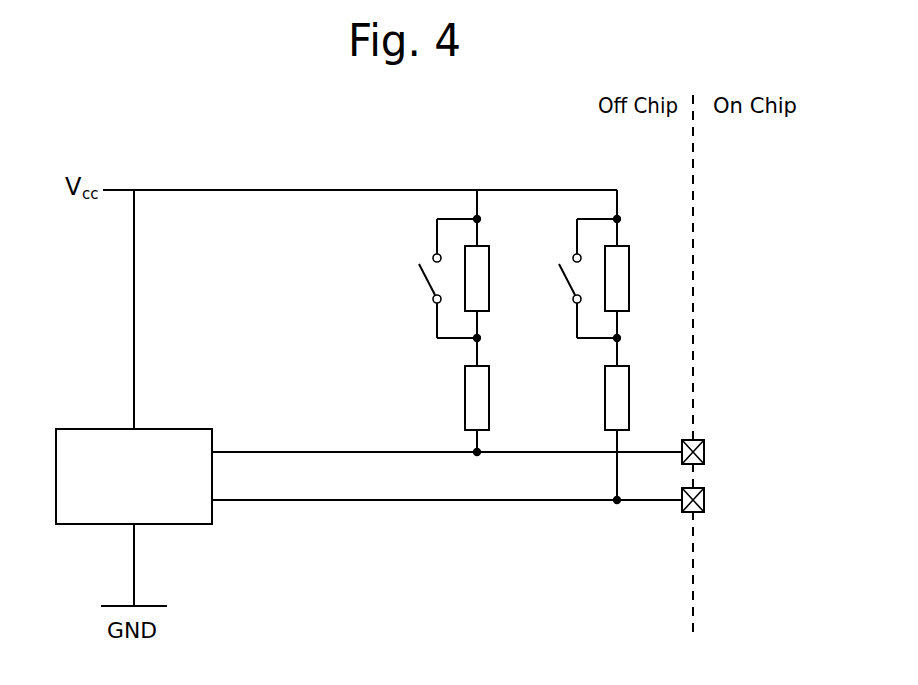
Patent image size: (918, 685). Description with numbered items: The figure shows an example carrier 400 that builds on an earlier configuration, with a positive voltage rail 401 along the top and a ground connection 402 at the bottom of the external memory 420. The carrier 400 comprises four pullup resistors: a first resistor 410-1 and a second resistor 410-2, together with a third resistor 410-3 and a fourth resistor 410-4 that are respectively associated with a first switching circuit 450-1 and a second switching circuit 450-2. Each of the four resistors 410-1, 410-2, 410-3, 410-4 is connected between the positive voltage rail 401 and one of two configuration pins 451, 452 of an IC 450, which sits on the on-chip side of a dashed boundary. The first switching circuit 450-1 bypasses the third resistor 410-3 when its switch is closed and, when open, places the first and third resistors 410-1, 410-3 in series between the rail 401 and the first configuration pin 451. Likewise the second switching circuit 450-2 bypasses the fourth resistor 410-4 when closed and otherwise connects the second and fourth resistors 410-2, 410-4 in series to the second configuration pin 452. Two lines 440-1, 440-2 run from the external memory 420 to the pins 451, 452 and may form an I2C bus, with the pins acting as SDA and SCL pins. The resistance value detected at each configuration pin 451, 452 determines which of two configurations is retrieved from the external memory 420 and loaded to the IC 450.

The carrier 400 is at (124, 108).
The positive voltage rail 401 is at (196, 190).
The ground connection 402 is at (108, 642).
The first resistor 410-1 is at (465, 397).
The second resistor 410-2 is at (605, 405).
The third pullup resistor 410-3 is at (489, 297).
The fourth pullup resistor 410-4 is at (629, 288).
The external memory 420 is at (77, 429).
The line 440-1 is at (259, 455).
The second signal line 440-2 is at (545, 503).
The IC 450 is at (775, 174).
The first switching circuit 450-1 is at (396, 229).
The second switching circuit 450-2 is at (546, 229).
The first configuration pin 451 is at (706, 452).
The second configuration pin 452 is at (706, 500).